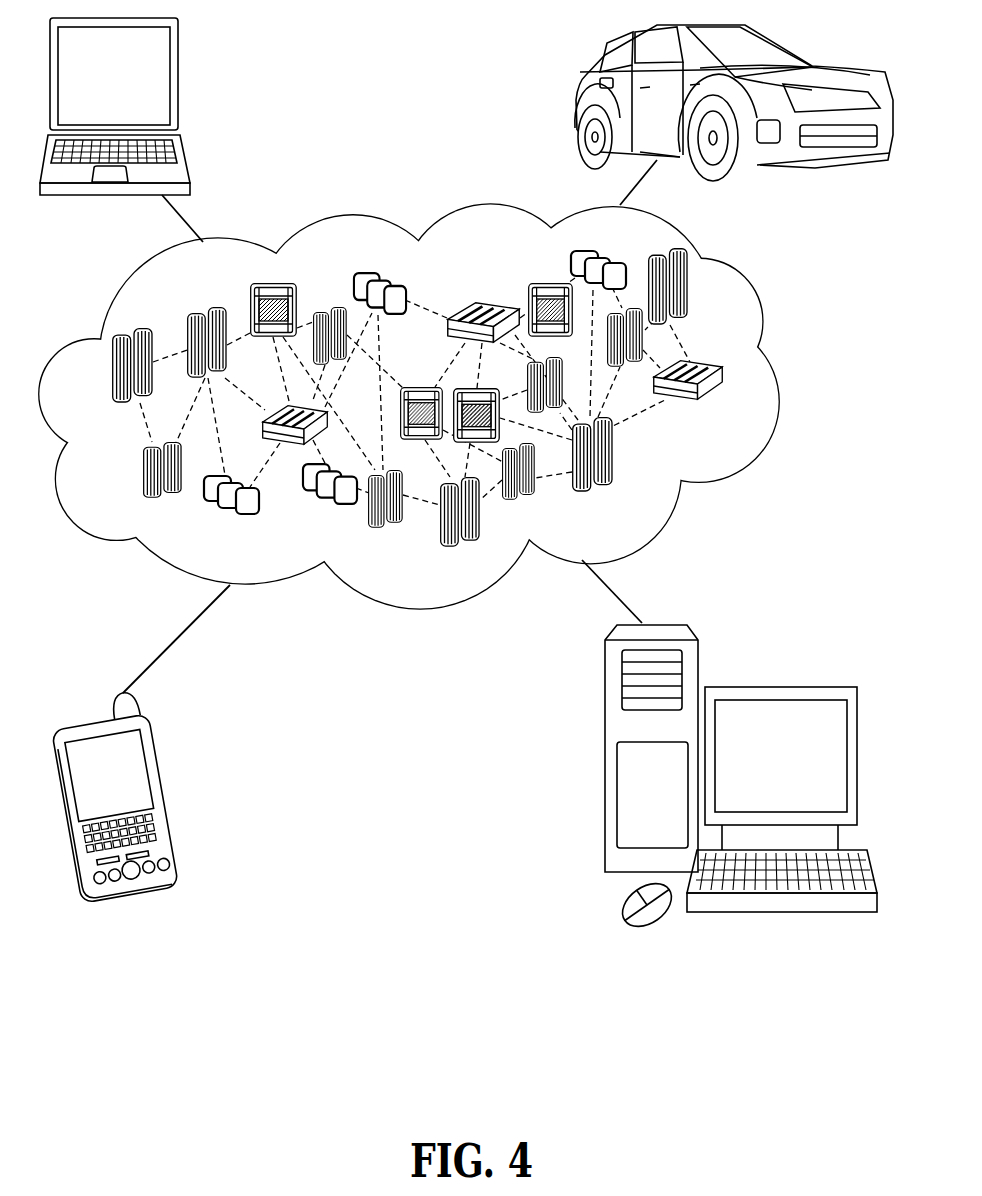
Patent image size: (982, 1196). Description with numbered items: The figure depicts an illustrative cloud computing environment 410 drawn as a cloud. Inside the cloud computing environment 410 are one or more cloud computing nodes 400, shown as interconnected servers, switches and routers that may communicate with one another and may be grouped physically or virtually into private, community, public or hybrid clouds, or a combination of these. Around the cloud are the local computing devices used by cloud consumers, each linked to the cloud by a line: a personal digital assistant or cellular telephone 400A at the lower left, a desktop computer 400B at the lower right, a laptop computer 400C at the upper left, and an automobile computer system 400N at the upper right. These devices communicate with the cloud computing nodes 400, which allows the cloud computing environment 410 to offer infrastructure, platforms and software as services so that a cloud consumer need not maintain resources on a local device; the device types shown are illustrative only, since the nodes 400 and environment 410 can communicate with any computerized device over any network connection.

The cloud computing nodes 400 is at (732, 412).
The cloud computing environment 410 is at (780, 377).
The personal digital assistant (PDA) or cellular telephone 400A is at (170, 790).
The desktop computer 400B is at (772, 687).
The laptop computer 400C is at (178, 85).
The automobile computer system 400N is at (580, 97).